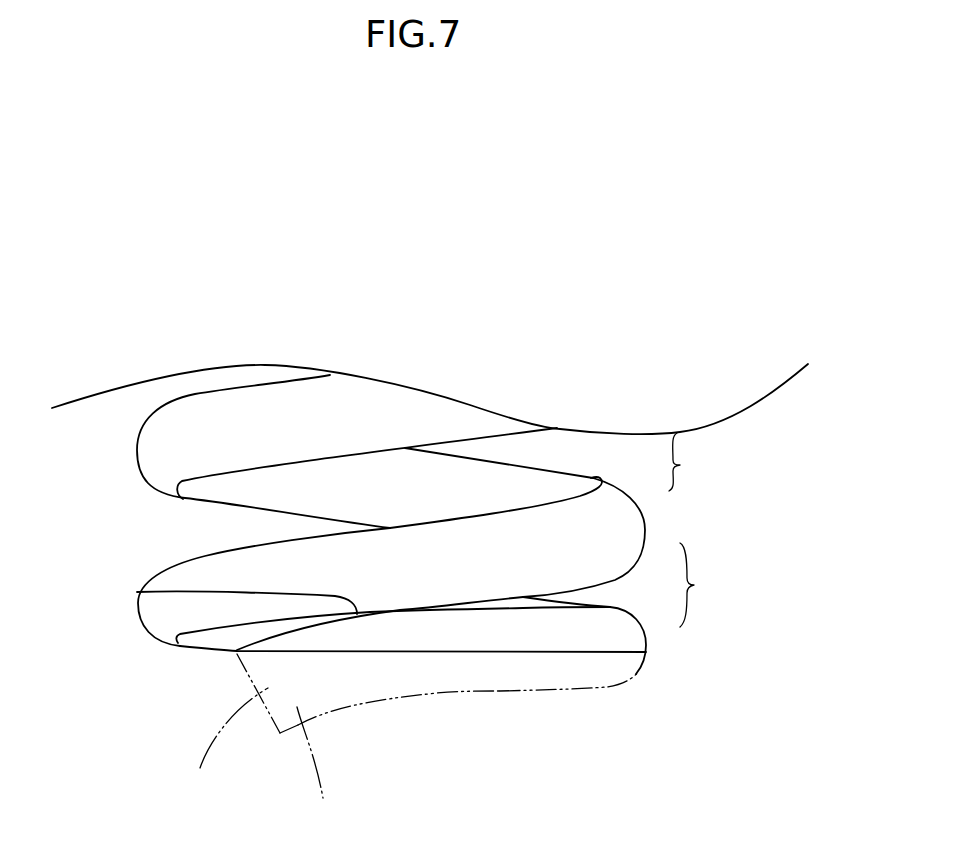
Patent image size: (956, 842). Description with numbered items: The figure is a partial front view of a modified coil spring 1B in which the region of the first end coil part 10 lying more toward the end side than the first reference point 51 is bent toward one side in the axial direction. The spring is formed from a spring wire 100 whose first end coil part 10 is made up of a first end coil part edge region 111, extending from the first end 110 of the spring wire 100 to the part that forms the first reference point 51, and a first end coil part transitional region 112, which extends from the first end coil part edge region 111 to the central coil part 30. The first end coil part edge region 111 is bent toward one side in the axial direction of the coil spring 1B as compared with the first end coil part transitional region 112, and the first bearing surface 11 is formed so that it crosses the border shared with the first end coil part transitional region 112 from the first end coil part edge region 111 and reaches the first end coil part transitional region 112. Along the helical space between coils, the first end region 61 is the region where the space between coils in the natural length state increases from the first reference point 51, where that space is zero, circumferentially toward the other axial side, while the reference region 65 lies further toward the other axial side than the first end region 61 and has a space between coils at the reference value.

The coil spring 1B is at (604, 272).
The central coil part 30 is at (753, 436).
The spring wire 100 is at (173, 453).
The first reference point 51 is at (137, 592).
The reference region 65 is at (689, 462).
The first end region 61 is at (698, 585).
The first end coil part 10 is at (687, 648).
The first bearing surface 11 is at (438, 652).
The first end coil part transitional region 112 is at (568, 645).
The first end 110 is at (241, 725).
The first end coil part edge region 111 is at (318, 765).